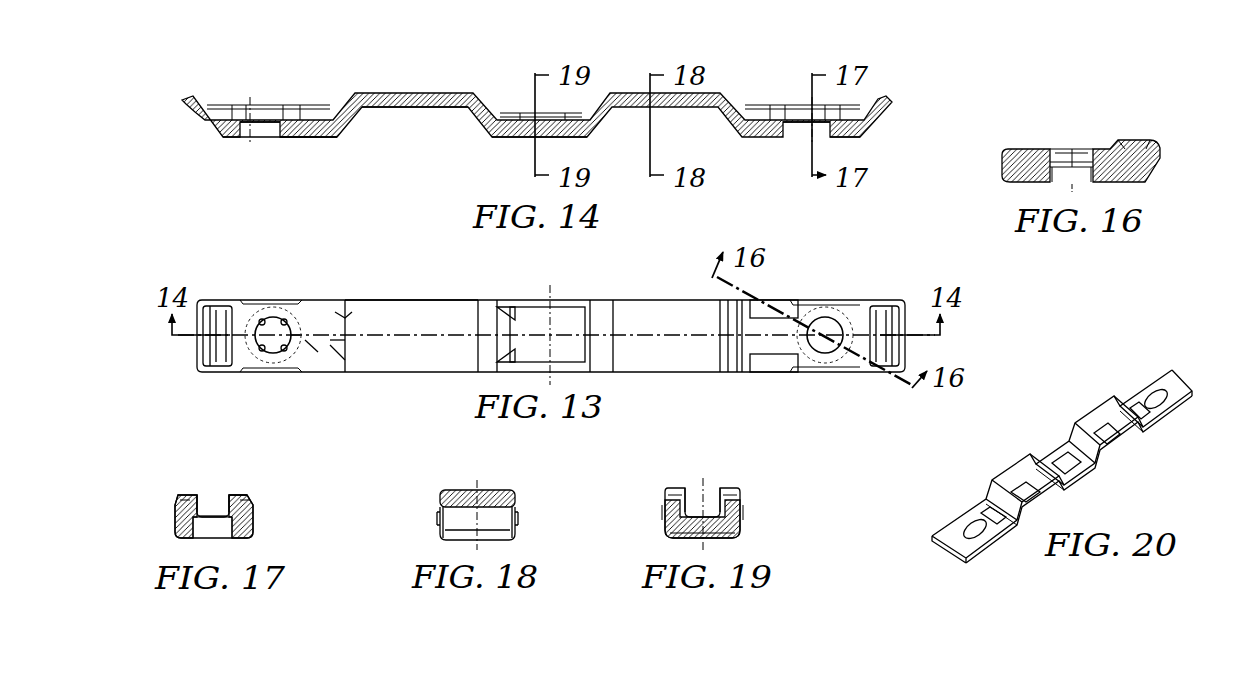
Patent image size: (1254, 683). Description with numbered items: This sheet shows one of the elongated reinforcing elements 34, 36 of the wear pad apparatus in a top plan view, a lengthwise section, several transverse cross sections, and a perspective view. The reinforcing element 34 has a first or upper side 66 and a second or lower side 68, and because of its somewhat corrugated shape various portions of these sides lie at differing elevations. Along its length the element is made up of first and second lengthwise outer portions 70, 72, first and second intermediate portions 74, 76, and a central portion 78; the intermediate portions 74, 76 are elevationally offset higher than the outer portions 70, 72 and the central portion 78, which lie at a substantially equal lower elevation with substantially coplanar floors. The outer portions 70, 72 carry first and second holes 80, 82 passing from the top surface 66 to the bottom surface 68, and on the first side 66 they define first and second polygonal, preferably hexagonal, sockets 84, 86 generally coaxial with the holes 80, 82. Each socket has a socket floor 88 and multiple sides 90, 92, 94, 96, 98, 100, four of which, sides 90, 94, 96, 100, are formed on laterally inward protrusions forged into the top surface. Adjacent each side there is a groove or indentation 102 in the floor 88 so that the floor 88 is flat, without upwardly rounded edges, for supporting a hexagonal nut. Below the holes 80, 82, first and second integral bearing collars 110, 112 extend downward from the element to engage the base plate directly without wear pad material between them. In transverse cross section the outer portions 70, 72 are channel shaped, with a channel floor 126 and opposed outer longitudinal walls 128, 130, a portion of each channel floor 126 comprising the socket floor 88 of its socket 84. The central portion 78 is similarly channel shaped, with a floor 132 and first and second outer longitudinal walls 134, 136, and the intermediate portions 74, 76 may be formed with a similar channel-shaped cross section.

In FIG. 14, the first elongated reinforcing element 34 is at (585, 107).
In FIG. 13, the first elongated reinforcing element 34 is at (589, 323).
In FIG. 20, the first elongated reinforcing element 34 is at (1060, 466).
In FIG. 14, the second elongated reinforcing element 36 is at (896, 88).
In FIG. 13, the second elongated reinforcing element 36 is at (909, 280).
In FIG. 20, the second elongated reinforcing element 36 is at (1026, 452).
In FIG. 14, the first side 66 is at (214, 115).
In FIG. 13, the first side 66 is at (425, 313).
In FIG. 14, the second side 68 is at (221, 142).
In FIG. 14, the first lengthwise outer portion 70 is at (178, 70).
In FIG. 14, the second lengthwise outer portion 72 is at (720, 70).
In FIG. 14, the first intermediate portion 74 is at (478, 70).
In FIG. 14, the second intermediate portion 76 is at (595, 70).
In FIG. 14, the central portion 78 is at (590, 70).
In FIG. 14, the first hole 80 is at (246, 133).
In FIG. 14, the second hole 82 is at (822, 140).
In FIG. 13, the first socket 84 is at (207, 336).
In FIG. 13, the second socket 86 is at (816, 320).
In FIG. 13, the socket floor 88 is at (283, 355).
In FIG. 17, the socket floor 88 is at (196, 512).
In FIG. 13, the socket side 90 is at (256, 343).
In FIG. 13, the socket side 92 is at (272, 353).
In FIG. 13, the socket side 94 is at (310, 347).
In FIG. 13, the socket side 96 is at (293, 330).
In FIG. 13, the socket side 98 is at (286, 318).
In FIG. 13, the socket side 100 is at (267, 317).
In FIG. 16, the groove 102 is at (1047, 160).
In FIG. 17, the groove 102 is at (182, 522).
In FIG. 14, the first integral bearing collar 110 is at (288, 142).
In FIG. 14, the second integral bearing collar 112 is at (783, 142).
In FIG. 13, the channel floor 126 is at (335, 342).
In FIG. 17, the channel floor 126 is at (220, 513).
In FIG. 13, the outer longitudinal wall 128 is at (346, 318).
In FIG. 17, the outer longitudinal wall 128 is at (191, 500).
In FIG. 13, the outer longitudinal wall 130 is at (345, 345).
In FIG. 17, the outer longitudinal wall 130 is at (238, 500).
In FIG. 19, the floor 132 is at (706, 516).
In FIG. 19, the first outer longitudinal wall 134 is at (688, 503).
In FIG. 19, the second outer longitudinal wall 136 is at (726, 497).